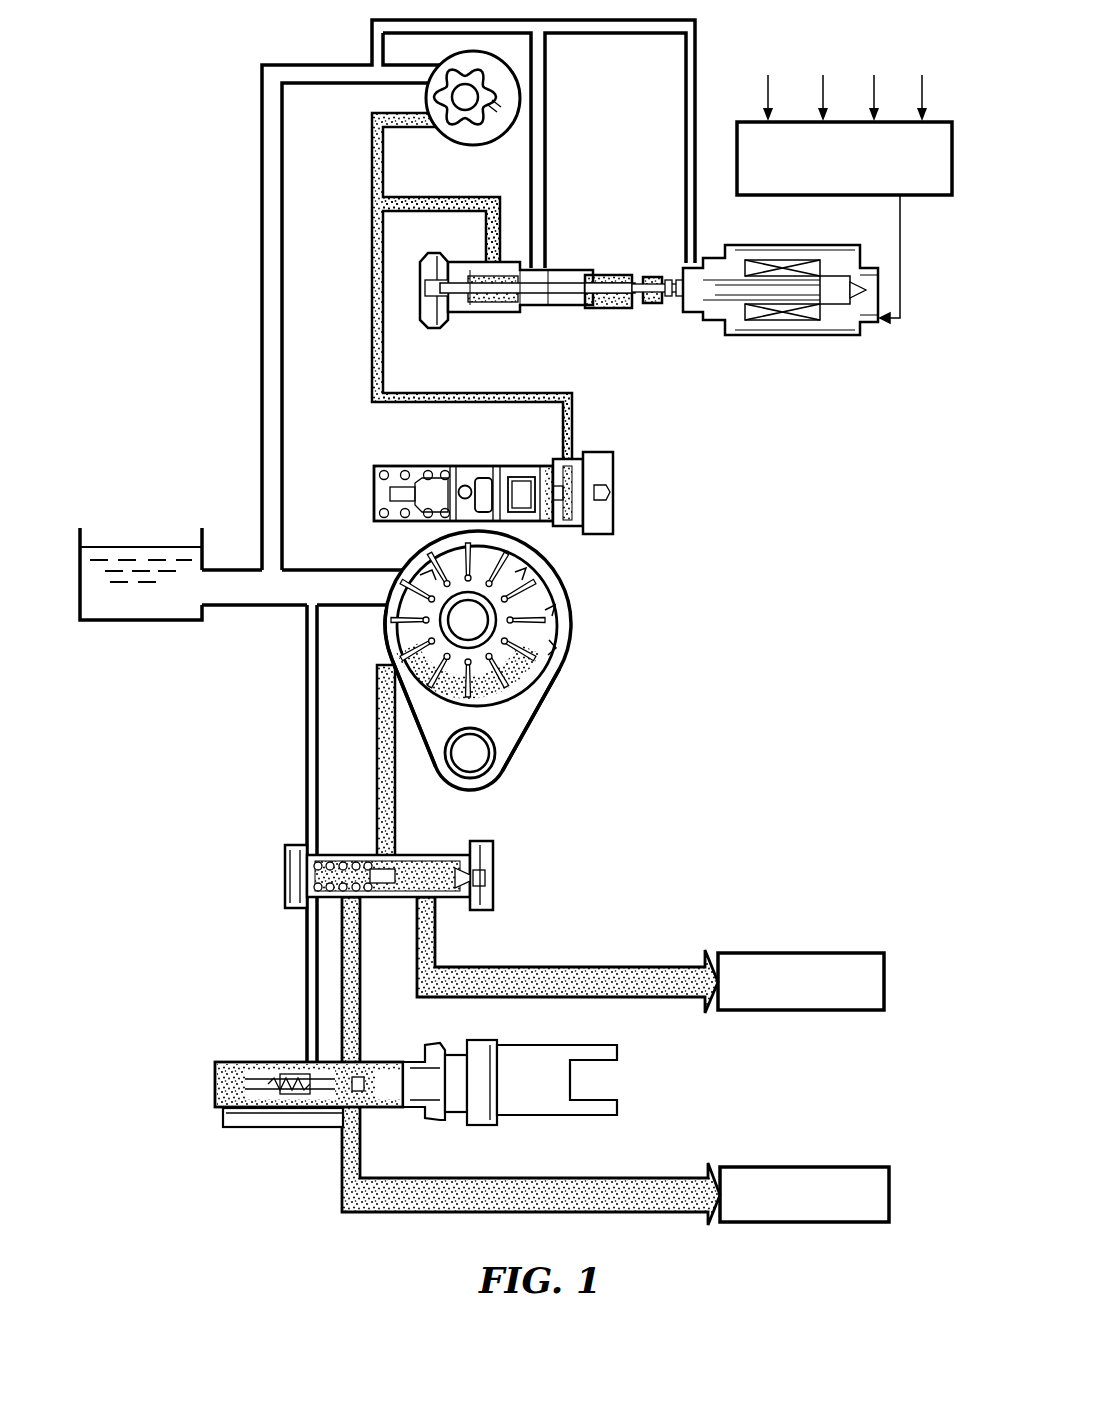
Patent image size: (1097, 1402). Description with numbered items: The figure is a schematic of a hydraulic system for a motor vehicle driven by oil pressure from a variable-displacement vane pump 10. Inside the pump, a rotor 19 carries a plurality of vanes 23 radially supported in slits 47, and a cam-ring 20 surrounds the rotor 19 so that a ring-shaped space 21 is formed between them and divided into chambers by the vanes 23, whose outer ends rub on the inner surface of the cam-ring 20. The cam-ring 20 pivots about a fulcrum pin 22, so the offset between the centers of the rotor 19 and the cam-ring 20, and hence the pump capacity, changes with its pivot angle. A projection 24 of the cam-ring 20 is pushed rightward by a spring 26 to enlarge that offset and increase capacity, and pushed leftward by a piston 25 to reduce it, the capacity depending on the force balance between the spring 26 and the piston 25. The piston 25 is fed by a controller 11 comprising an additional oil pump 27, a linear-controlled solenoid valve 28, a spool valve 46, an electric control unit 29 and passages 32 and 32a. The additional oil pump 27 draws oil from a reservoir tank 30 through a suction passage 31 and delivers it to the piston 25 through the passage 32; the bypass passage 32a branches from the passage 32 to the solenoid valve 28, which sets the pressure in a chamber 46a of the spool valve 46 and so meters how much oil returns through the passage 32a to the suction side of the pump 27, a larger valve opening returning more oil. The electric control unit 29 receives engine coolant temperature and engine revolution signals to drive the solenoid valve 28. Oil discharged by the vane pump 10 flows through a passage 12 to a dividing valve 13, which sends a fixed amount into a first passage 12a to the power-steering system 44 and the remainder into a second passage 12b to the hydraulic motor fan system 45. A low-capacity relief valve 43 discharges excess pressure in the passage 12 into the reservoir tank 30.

The vane pump 10 is at (486, 681).
The controller 11 is at (637, 322).
The passage 12 is at (398, 825).
The first passage 12a is at (362, 1035).
The second passage 12b is at (568, 965).
The dividing valve 13 is at (495, 878).
The rotor 19 is at (527, 633).
The cam-ring 20 is at (512, 737).
The ring-shaped space 21 is at (385, 637).
The fulcrum pin 22 is at (475, 765).
The vanes 23 is at (508, 617).
The projection 24 is at (470, 480).
The piston 25 is at (575, 428).
The spring 26 is at (374, 468).
The additional oil pump 27 is at (520, 93).
The linear-controlled solenoid valve 28 is at (765, 248).
The electric control unit (ECU) 29 is at (922, 183).
The reservoir tank 30 is at (107, 615).
The suction passage 31 is at (243, 600).
The passage 32 is at (372, 177).
The bypass passage 32a is at (472, 195).
The relief valve 43 is at (230, 1060).
The power-steering system 44 is at (816, 1173).
The hydraulic motor fan system 45 is at (828, 962).
The spool valve 46 is at (556, 270).
The chamber 46a is at (637, 275).
The slits 47 is at (503, 598).